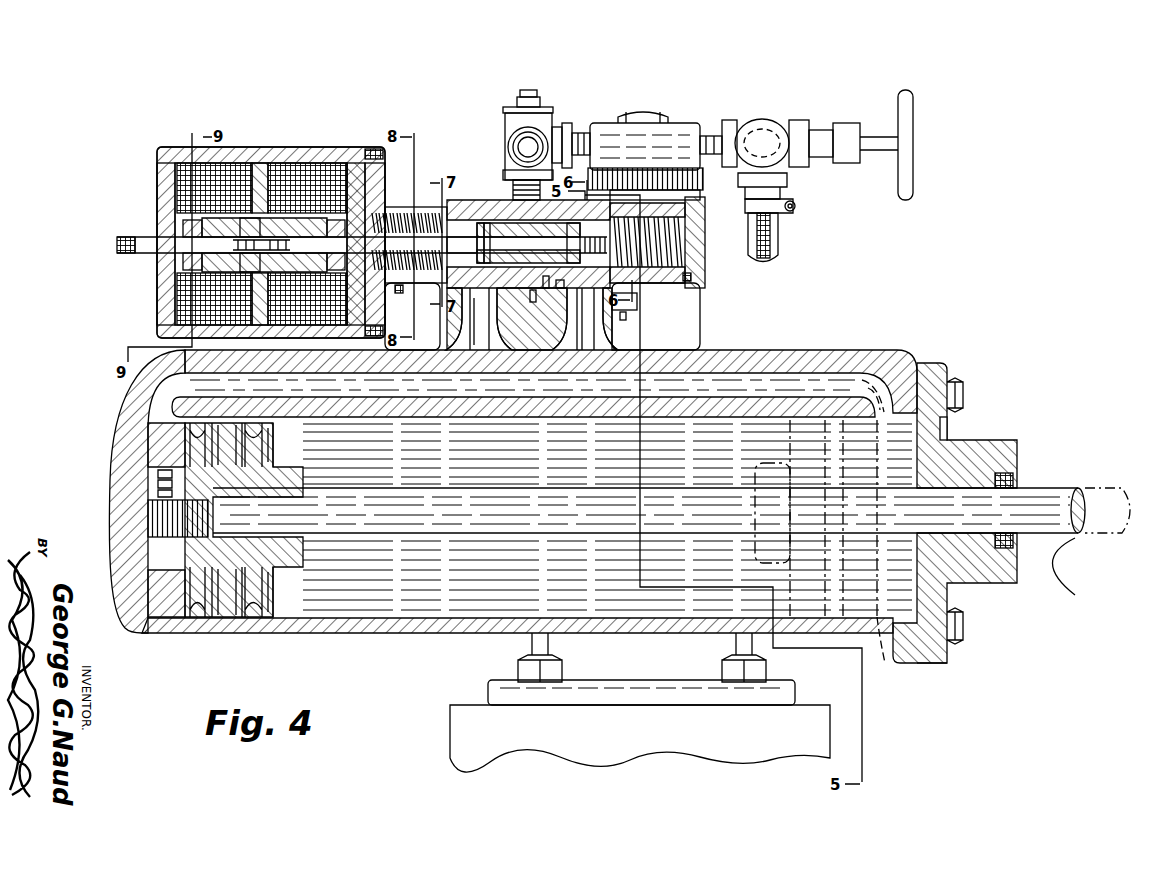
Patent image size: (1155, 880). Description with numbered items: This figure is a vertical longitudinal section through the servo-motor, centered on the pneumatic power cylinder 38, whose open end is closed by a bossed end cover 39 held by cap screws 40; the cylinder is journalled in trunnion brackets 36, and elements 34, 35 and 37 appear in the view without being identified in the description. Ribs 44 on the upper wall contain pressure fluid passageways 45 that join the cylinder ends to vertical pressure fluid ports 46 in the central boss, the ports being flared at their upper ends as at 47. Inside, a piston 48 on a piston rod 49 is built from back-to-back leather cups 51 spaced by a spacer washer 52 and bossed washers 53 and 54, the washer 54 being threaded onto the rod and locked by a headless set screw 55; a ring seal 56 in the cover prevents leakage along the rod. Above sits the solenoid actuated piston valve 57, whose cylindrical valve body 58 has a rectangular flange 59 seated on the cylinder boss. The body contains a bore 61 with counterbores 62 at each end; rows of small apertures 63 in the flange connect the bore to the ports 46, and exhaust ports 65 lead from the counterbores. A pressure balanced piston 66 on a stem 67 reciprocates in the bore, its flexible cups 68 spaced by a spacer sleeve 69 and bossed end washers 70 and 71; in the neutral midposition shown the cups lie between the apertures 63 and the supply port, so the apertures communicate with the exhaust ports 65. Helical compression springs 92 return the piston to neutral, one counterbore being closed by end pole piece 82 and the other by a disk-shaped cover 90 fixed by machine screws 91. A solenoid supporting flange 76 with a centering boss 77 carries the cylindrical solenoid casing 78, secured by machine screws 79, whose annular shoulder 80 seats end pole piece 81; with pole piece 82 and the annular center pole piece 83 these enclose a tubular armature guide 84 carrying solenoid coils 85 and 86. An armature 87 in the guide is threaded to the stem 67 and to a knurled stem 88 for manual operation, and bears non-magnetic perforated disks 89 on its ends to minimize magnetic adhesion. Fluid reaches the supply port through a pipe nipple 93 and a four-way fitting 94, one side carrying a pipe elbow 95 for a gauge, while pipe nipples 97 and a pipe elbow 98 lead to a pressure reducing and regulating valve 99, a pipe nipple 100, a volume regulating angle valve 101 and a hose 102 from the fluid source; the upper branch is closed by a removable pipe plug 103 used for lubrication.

The mounting bracket 34 is at (965, 660).
The base 35 is at (607, 750).
The trunnion brackets 36 is at (488, 692).
The bolts 37 is at (520, 660).
The pneumatic power cylinder 38 is at (375, 635).
The bossed end cover 39 is at (945, 366).
The cap screws 40 is at (963, 395).
The integral ribs 44 is at (175, 350).
The pressure fluid passageways 45 is at (160, 395).
The pressure fluid ports 46 is at (490, 336).
The outwardly flared side portions 47 is at (450, 350).
The piston 48 is at (293, 618).
The piston rod 49 is at (1122, 531).
The cups 51 is at (190, 618).
The spacer washer 52 is at (226, 618).
The bossed washer 53 is at (310, 620).
The bossed washer 54 is at (160, 618).
The headless set screw 55 is at (160, 480).
The ring seal 56 is at (1013, 482).
The solenoid actuated piston valve 57 is at (135, 178).
The cylindrical valve body 58 is at (446, 200).
The rectangular flange 59 is at (626, 314).
The cylindrical bore 61 is at (545, 287).
The counterbores 62 is at (405, 212).
The rows of apertures 63 is at (533, 295).
The pressure fluid exhaust ports 65 is at (440, 292).
The flexible cup type piston 66 is at (480, 222).
The piston rod or stem 67 is at (450, 240).
The flexible cups 68 is at (568, 226).
The intermediate spacer sleeve 69 is at (487, 225).
The bossed end washer 70 is at (478, 228).
The bossed end washer 71 is at (606, 225).
The solenoid supporting flange 76 is at (372, 148).
The centering boss 77 is at (386, 182).
The cylindrical solenoid casing 78 is at (180, 148).
The machine screws 79 is at (383, 148).
The annular shoulder 80 is at (180, 300).
The end pole piece 81 is at (165, 190).
The end pole piece 82 is at (352, 163).
The annular center pole piece 83 is at (262, 165).
The tubular armature guide 84 is at (190, 252).
The solenoid coil 85 is at (225, 165).
The solenoid coil 86 is at (288, 210).
The armature 87 is at (245, 220).
The knurled stem 88 is at (125, 240).
The centrally perforated disks 89 is at (332, 218).
The disk-shaped cover 90 is at (700, 245).
The machine screws 91 is at (705, 216).
The helical compression springs 92 is at (692, 262).
The pipe nipple 93 is at (508, 160).
The four-way fitting 94 is at (556, 126).
The pipe elbow 95 is at (520, 135).
The pipe nipples 97 is at (583, 133).
The pipe elbow 98 is at (568, 122).
The pressure fluid reducing and regulating valve 99 is at (655, 125).
The pipe nipple 100 is at (712, 136).
The pressure fluid volume regulating angle valve 101 is at (770, 120).
The hose 102 is at (778, 236).
The pipe plug 103 is at (528, 88).